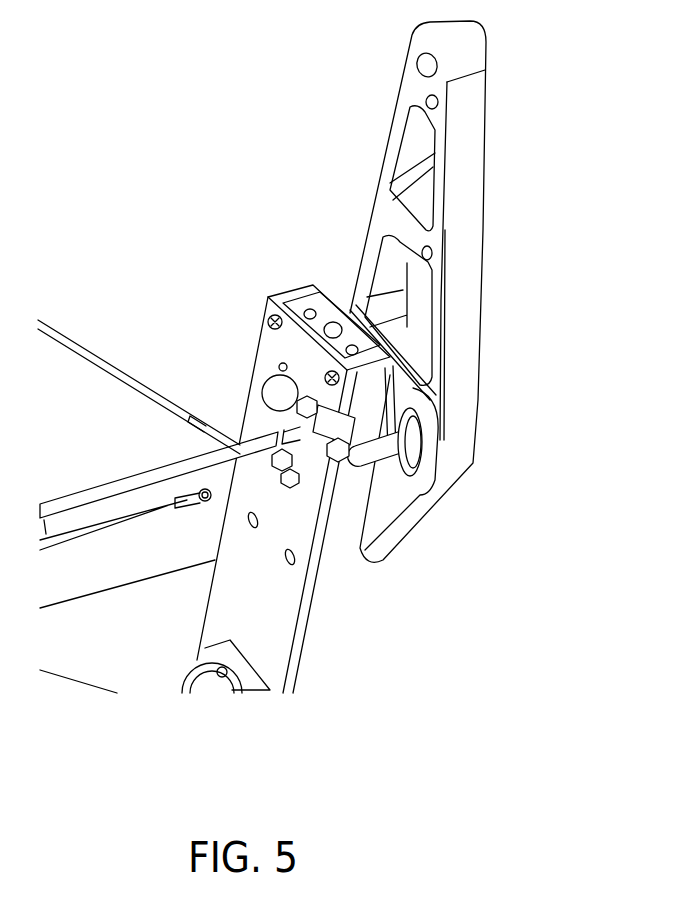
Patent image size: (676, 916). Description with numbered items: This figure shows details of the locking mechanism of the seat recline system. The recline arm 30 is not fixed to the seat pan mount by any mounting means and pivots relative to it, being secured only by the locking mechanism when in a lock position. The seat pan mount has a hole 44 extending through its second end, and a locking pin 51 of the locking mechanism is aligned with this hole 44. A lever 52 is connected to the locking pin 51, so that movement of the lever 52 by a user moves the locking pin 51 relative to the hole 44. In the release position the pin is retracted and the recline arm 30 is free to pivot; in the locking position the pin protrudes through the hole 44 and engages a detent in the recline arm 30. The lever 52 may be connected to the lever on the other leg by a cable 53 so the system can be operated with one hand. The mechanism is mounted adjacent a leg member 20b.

The recline arm 30 is at (463, 230).
The bracket plate 20b is at (322, 613).
The locking pin 51 is at (393, 450).
The hole 44 is at (418, 455).
The lever 52 is at (273, 388).
The cable 53 is at (153, 483).